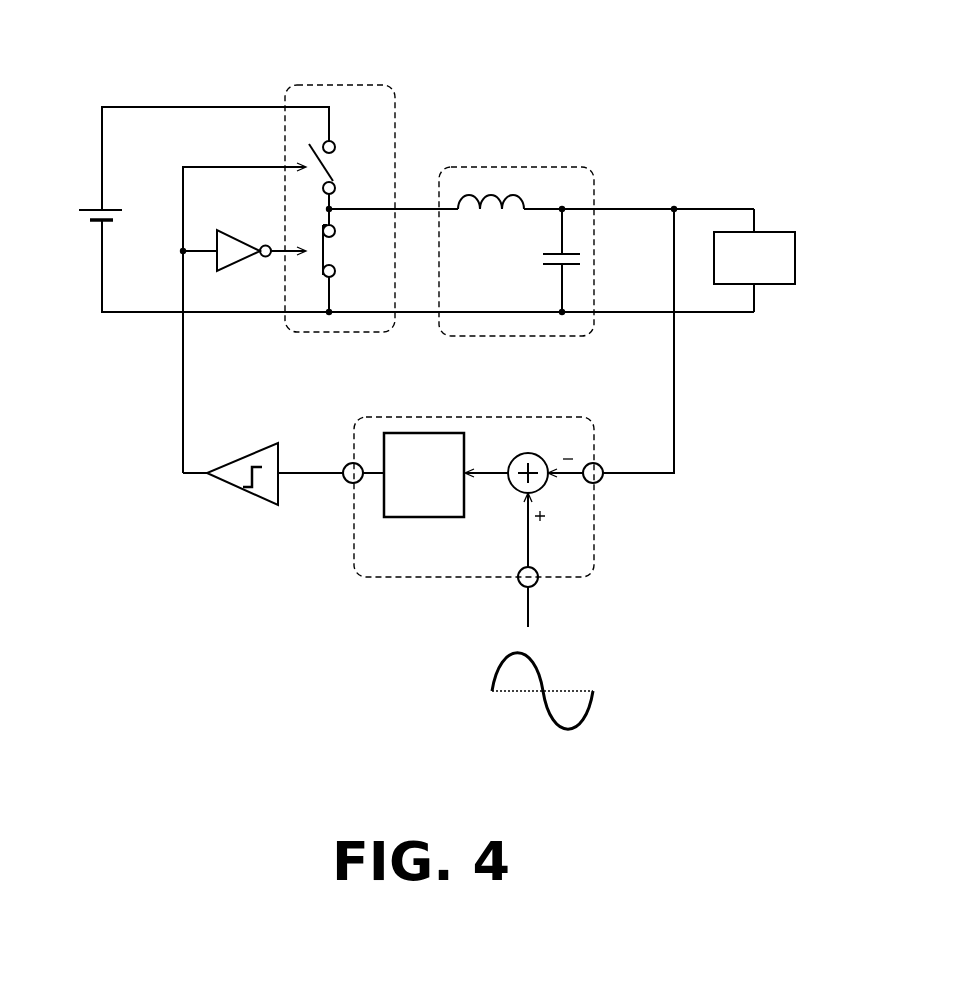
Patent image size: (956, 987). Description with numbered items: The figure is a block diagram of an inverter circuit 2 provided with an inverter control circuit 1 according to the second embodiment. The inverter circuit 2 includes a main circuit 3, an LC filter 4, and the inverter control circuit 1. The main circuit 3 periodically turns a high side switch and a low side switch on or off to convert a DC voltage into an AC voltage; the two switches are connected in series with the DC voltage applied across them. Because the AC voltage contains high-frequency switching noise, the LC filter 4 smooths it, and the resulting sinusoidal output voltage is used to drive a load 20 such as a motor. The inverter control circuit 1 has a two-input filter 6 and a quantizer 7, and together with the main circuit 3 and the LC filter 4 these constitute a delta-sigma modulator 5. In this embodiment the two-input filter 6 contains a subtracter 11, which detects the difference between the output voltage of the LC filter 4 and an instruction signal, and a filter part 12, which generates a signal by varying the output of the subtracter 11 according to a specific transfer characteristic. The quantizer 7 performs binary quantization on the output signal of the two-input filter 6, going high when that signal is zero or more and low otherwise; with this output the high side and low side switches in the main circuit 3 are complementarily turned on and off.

The inverter control circuit 1 is at (255, 552).
The inverter circuit 2 is at (550, 785).
The main circuit 3 is at (332, 85).
The LC filter 4 is at (515, 167).
The ΔΣ modulator 5 is at (685, 538).
The two-input filter 6 is at (420, 417).
The quantizer 7 is at (242, 460).
The subtracter 11 is at (528, 453).
The filter part 12 is at (408, 517).
The load 20 is at (778, 285).